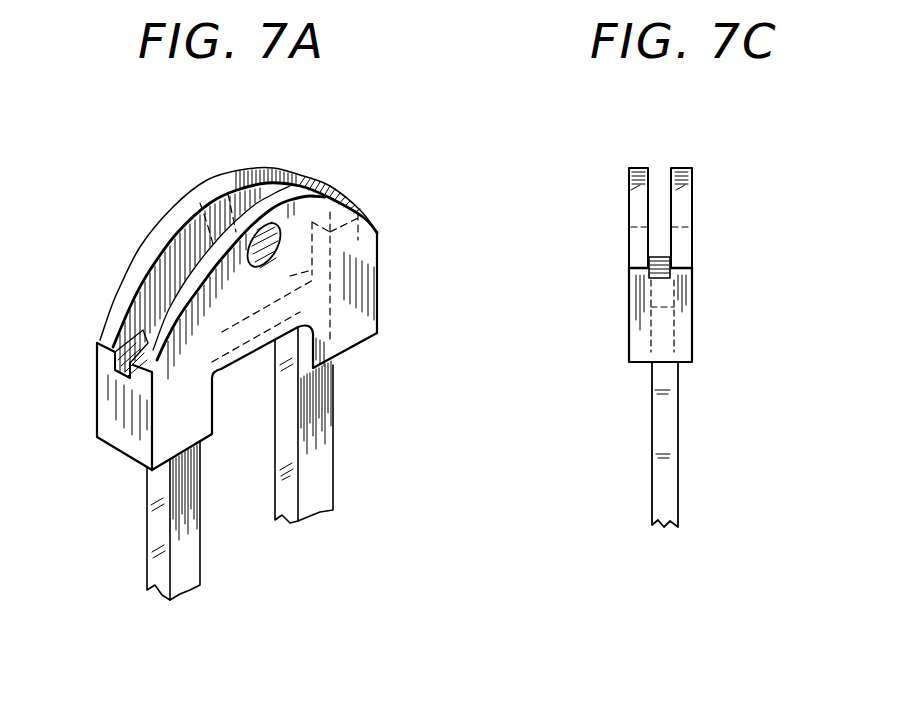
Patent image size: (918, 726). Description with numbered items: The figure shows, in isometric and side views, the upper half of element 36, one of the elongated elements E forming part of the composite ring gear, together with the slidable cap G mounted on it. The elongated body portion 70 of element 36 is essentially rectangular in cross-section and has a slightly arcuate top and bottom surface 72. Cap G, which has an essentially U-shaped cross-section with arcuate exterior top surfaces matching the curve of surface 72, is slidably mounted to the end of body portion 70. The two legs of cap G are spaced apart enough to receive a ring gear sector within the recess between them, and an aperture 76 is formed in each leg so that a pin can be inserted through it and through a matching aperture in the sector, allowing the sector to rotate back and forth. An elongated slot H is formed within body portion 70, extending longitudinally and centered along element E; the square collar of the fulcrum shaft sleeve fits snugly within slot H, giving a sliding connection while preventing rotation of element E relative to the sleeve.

In FIG. 7A, the aperture 76 is at (200, 216).
In FIG. 7C, the aperture 76 is at (638, 194).
In FIG. 7A, the arcuate top and bottom surface 72 is at (120, 346).
In FIG. 7C, the arcuate top and bottom surface 72 is at (661, 258).
In FIG. 7A, the element 36 is at (327, 398).
In FIG. 7C, the element 36 is at (653, 402).
In FIG. 7A, the elongated body portion 70 is at (325, 457).
In FIG. 7C, the elongated body portion 70 is at (667, 430).
In FIG. 7A, the cap G is at (379, 275).
In FIG. 7C, the cap G is at (694, 303).
In FIG. 7A, the elongated element E is at (152, 526).
In FIG. 7C, the elongated element E is at (678, 470).
In FIG. 7A, the slot H is at (290, 487).